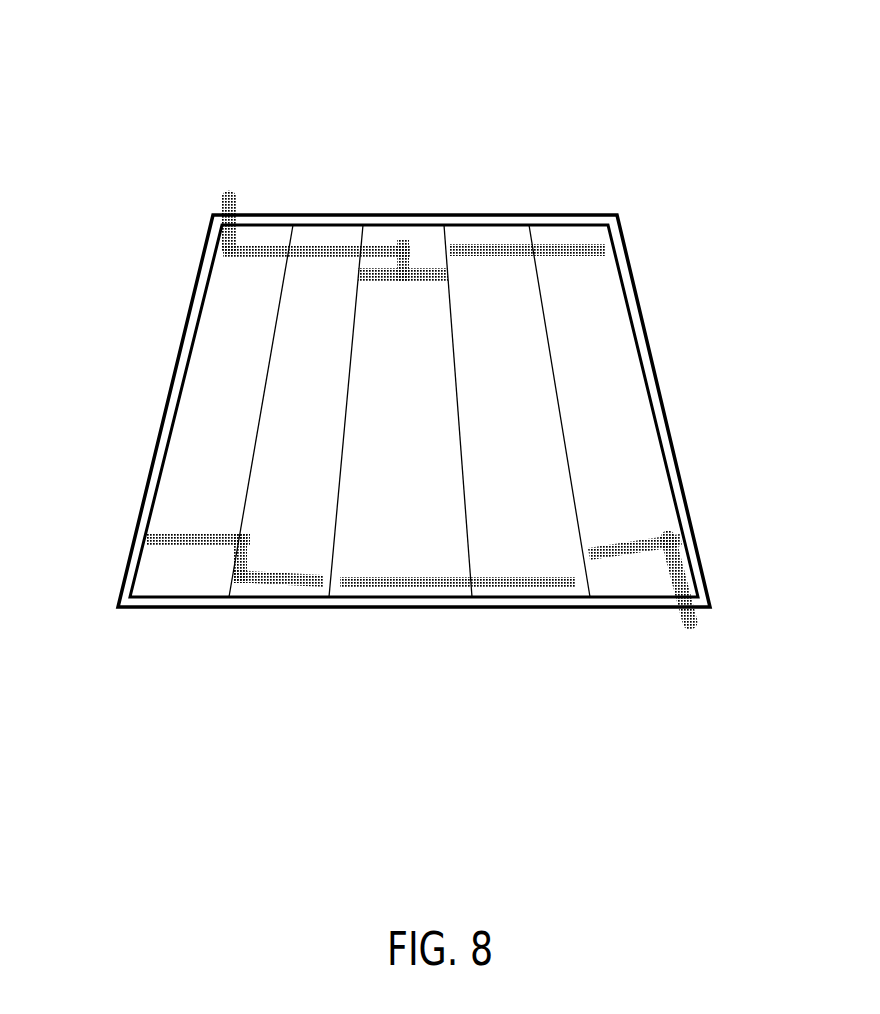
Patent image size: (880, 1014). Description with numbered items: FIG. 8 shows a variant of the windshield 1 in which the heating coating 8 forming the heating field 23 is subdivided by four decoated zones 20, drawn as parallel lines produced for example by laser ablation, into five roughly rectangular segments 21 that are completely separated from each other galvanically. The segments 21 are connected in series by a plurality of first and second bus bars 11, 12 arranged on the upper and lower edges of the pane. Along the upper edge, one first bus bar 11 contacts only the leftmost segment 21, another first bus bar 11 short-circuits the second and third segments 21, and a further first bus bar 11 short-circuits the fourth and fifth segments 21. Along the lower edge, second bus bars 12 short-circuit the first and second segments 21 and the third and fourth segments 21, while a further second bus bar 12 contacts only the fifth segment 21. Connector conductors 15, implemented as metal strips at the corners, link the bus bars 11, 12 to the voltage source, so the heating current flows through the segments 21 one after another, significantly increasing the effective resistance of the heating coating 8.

The windshield 1 is at (128, 80).
The heating coating 8 is at (193, 295).
The first bus bar 11 is at (272, 241).
The second bus bar 12 is at (192, 546).
The connector conductor 15 is at (223, 205).
The decoated zone 20 is at (340, 483).
The segment 21 is at (265, 330).
The heating field 23 is at (232, 379).